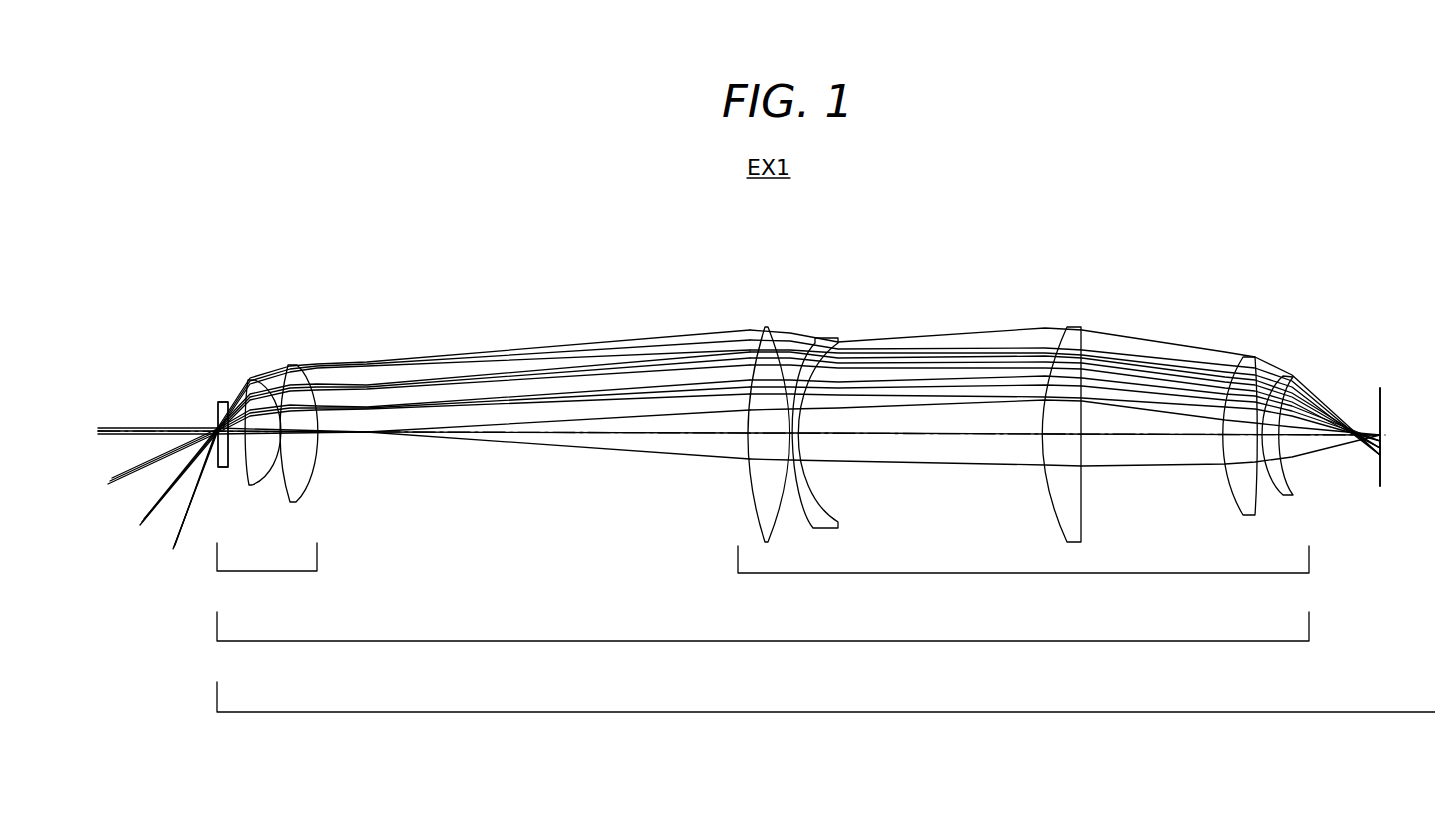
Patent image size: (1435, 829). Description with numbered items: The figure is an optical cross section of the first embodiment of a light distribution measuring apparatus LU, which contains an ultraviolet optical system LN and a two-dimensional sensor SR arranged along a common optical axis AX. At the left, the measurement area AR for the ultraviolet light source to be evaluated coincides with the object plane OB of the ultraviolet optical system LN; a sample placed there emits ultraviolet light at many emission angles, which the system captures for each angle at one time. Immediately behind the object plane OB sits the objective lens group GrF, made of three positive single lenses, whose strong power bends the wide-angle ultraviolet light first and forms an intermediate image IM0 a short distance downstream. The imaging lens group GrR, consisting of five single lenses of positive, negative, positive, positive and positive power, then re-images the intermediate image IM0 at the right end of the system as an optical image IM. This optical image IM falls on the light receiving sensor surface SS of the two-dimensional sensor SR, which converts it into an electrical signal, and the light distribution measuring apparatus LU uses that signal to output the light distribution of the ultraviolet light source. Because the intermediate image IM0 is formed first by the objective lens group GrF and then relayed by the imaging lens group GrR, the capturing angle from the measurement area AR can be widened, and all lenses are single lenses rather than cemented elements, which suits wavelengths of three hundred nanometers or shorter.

The optical axis AX is at (122, 429).
The measurement area AR is at (215, 397).
The object plane OB is at (215, 397).
The intermediate image IM0 is at (367, 441).
The objective lens group GrF is at (250, 457).
The imaging lens group GrR is at (1059, 467).
The ultraviolet optical system LN is at (763, 643).
The light distribution measuring apparatus LU is at (826, 713).
The light receiving sensor surface SS is at (1380, 389).
The two-dimensional sensor SR is at (1425, 449).
The optical image IM is at (1379, 471).